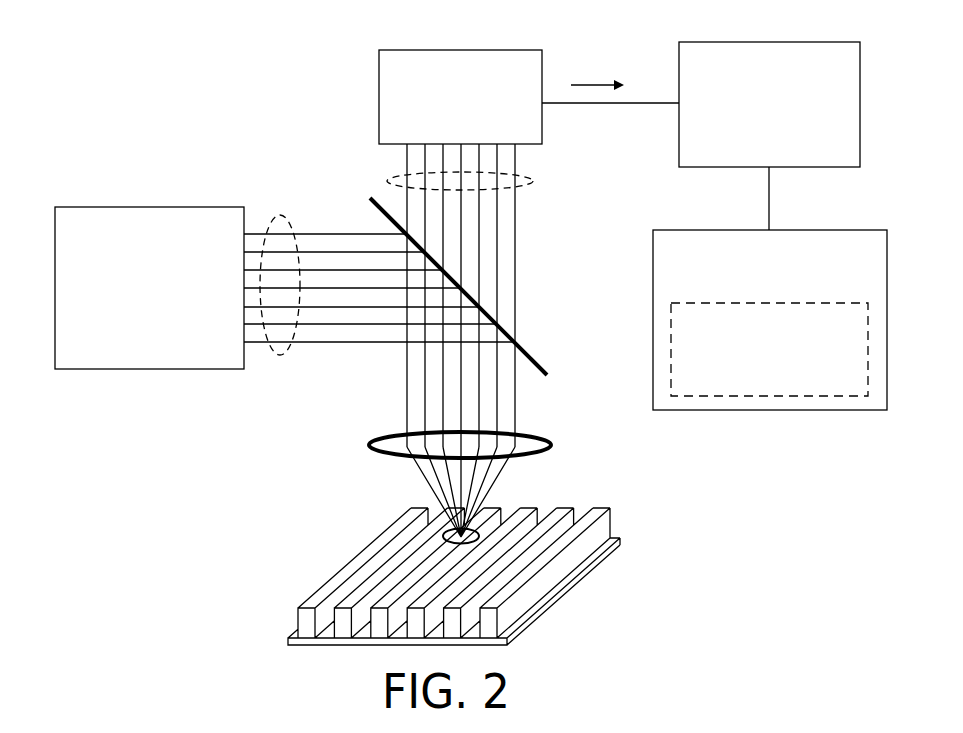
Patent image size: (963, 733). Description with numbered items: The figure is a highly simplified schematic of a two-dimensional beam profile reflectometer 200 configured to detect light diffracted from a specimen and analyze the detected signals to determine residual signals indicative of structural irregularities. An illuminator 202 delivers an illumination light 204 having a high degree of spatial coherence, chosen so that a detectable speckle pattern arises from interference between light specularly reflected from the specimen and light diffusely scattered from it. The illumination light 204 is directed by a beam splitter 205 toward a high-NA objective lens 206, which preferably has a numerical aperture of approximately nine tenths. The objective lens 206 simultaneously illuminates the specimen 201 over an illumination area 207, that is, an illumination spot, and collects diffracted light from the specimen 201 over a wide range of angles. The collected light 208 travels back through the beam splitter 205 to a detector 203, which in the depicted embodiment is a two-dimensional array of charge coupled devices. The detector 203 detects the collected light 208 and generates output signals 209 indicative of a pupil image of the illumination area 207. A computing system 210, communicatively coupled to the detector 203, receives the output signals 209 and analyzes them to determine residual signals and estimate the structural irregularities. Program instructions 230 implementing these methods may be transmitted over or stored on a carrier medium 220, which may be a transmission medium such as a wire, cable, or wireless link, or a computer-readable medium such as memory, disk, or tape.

The two-dimensional beam profile reflectometer 200 is at (234, 94).
The specimen 201 is at (610, 520).
The illuminator 202 is at (170, 315).
The detector 203 is at (480, 123).
The illumination light 204 is at (280, 356).
The beam splitter 205 is at (538, 358).
The objective lens 206 is at (551, 445).
The illumination area 207 is at (443, 533).
The collected light 208 is at (533, 181).
The output signals 209 is at (589, 83).
The computing system 210 is at (788, 145).
The carrier medium 220 is at (788, 293).
The program instructions 230 is at (785, 383).